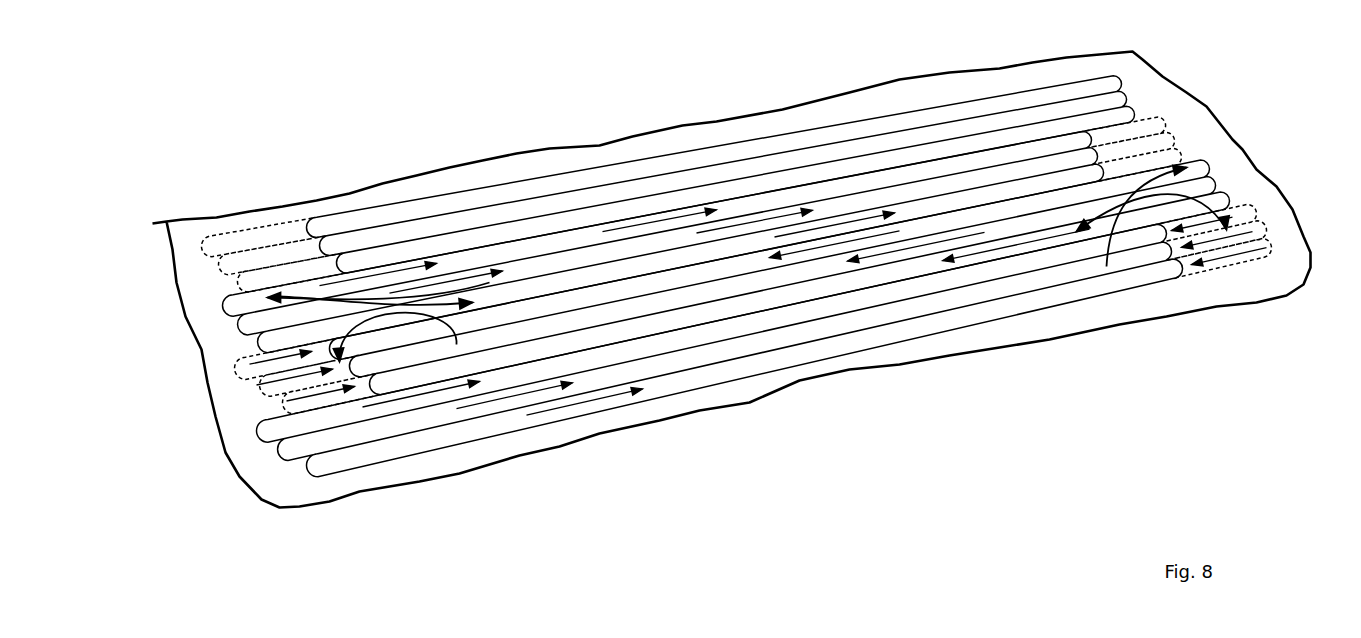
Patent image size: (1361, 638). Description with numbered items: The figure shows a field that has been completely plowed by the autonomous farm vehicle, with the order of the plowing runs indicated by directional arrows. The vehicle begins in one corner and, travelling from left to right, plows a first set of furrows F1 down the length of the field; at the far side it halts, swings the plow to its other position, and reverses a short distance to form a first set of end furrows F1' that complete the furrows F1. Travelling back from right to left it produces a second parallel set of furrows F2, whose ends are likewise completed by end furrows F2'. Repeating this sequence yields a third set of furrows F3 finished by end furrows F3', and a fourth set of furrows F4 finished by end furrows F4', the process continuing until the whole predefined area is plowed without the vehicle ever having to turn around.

The first set of furrows F1 is at (719, 350).
The first set of end furrows F1' is at (1248, 224).
The second parallel set of furrows F2 is at (779, 307).
The end furrows completing the second furrows F2' is at (263, 400).
The third set of furrows F3 is at (662, 226).
The end furrows completing the third furrows F3' is at (1168, 121).
The fourth set of furrows F4 is at (721, 165).
The end furrows completing the fourth furrows F4' is at (271, 220).